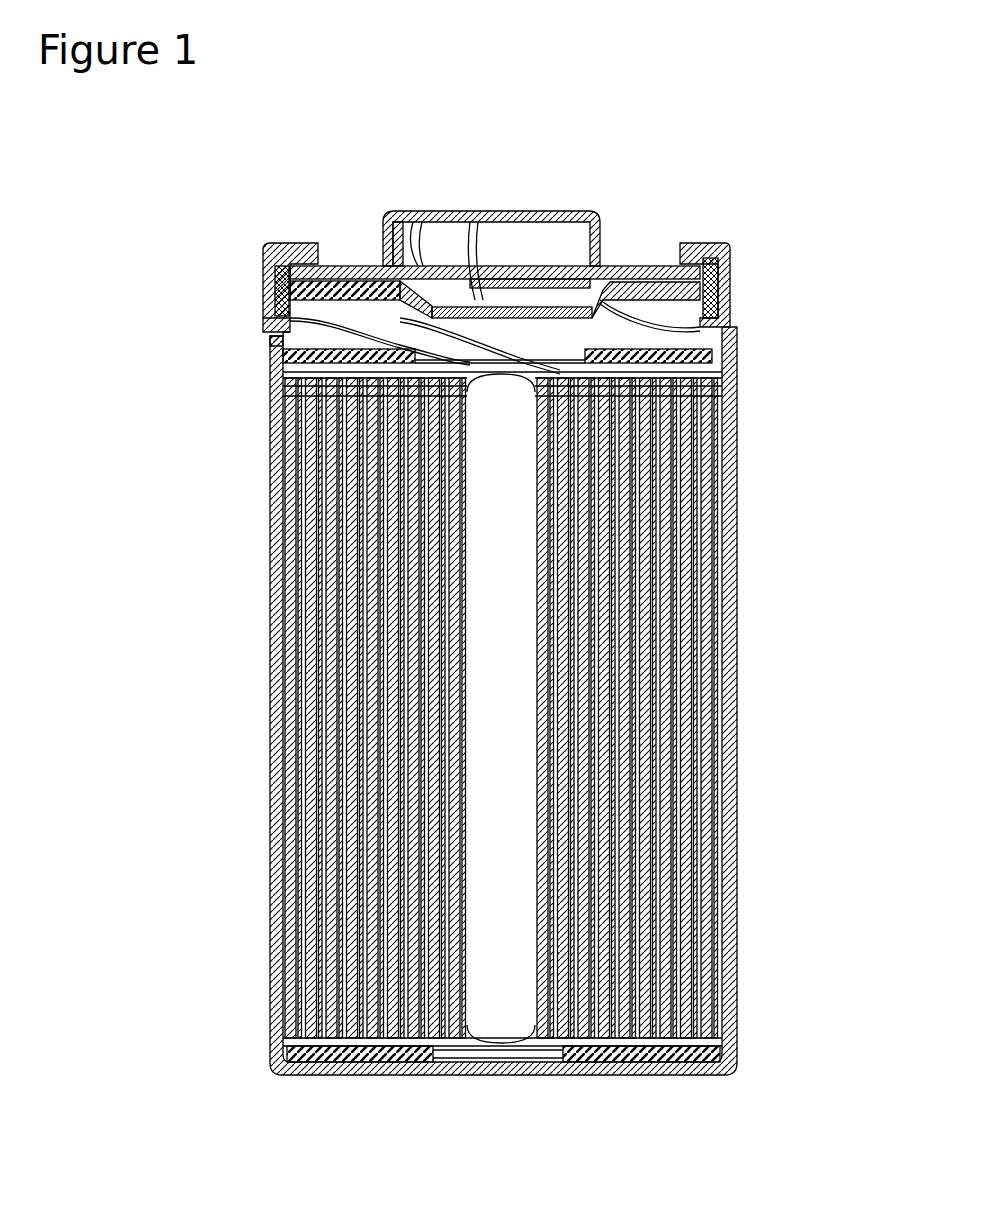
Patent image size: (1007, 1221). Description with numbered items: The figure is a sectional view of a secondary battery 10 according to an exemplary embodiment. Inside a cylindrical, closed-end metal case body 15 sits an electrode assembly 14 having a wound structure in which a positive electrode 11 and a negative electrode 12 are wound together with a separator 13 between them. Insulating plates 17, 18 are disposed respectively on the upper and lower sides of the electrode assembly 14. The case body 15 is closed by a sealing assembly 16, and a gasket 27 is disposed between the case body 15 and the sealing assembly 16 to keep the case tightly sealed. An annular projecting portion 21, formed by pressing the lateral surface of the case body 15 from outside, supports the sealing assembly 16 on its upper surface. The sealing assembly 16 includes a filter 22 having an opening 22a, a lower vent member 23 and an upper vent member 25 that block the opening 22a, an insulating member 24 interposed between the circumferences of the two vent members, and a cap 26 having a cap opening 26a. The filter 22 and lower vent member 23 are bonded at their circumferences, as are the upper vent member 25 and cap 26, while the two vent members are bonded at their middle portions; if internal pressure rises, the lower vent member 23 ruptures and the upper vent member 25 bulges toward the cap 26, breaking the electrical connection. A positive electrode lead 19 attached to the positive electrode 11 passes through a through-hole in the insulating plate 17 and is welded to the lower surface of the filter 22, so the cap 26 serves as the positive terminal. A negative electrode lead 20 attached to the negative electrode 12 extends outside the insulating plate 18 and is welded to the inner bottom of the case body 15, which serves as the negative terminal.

The secondary battery 10 is at (714, 103).
The positive electrode 11 is at (734, 768).
The negative electrode 12 is at (734, 798).
The separator 13 is at (734, 828).
The electrode assembly 14 is at (573, 709).
The case body 15 is at (722, 246).
The sealing assembly 16 is at (605, 212).
The insulating plate 17 is at (712, 356).
The insulating plate 18 is at (737, 1058).
The positive electrode lead 19 is at (272, 318).
The negative electrode lead 20 is at (282, 1052).
The projecting portion 21 is at (272, 338).
The filter 22 is at (498, 306).
The opening 22a is at (580, 306).
The lower vent member 23 is at (395, 214).
The insulating member 24 is at (342, 266).
The upper vent member 25 is at (422, 272).
The cap 26 is at (560, 232).
The cap opening 26a is at (620, 226).
The gasket 27 is at (730, 280).